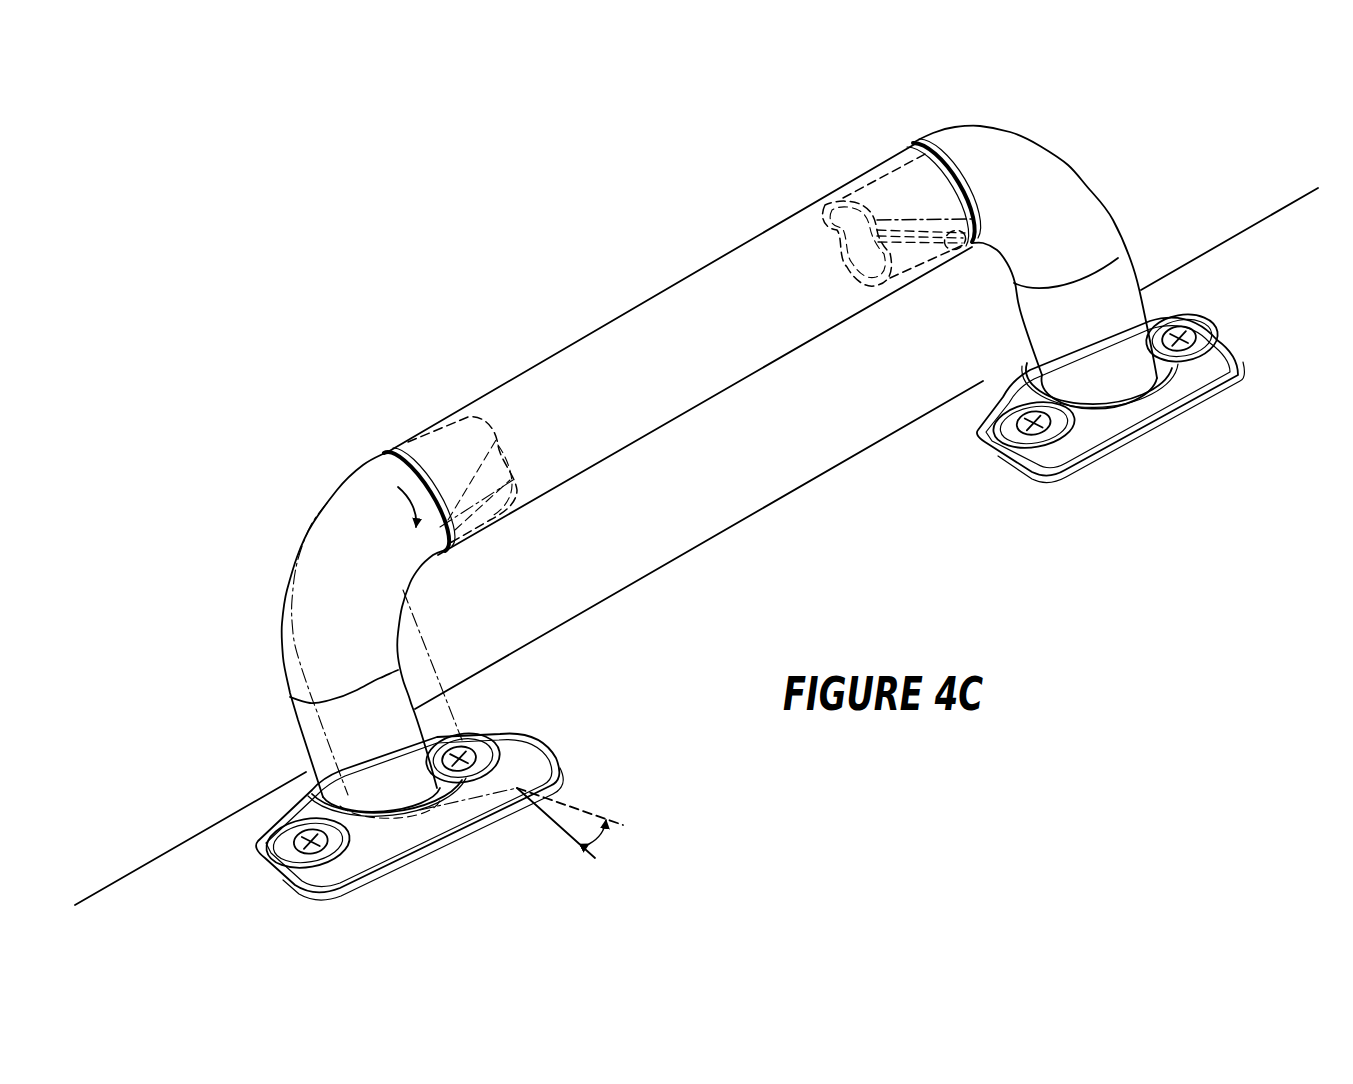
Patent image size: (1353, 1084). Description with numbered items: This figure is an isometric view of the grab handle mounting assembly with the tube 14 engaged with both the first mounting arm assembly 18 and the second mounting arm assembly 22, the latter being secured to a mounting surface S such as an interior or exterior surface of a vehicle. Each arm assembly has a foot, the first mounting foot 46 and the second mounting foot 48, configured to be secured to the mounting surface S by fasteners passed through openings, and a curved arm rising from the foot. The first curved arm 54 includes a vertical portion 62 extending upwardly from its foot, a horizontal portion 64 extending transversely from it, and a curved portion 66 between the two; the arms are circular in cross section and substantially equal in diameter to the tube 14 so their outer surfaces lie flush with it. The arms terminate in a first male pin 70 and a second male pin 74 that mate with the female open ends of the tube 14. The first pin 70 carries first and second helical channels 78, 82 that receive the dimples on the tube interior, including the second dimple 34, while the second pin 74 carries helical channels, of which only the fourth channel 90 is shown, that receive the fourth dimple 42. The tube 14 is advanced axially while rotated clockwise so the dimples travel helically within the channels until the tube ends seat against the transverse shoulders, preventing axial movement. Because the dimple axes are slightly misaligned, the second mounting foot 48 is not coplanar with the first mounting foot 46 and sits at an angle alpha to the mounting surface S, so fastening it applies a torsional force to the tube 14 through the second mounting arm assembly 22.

The tube 14 is at (697, 283).
The first mounting arm assembly 18 is at (1127, 121).
The second mounting arm assembly 22 is at (295, 476).
The second dimple 34 is at (963, 243).
The fourth dimple 42 is at (470, 532).
The first mounting foot 46 is at (1186, 371).
The second mounting foot 48 is at (262, 850).
The first curved arm 54 is at (1116, 198).
The vertical portion 62 is at (1123, 264).
The horizontal portion 64 is at (985, 141).
The curved portion 66 is at (1058, 152).
The first male pin 70 is at (887, 188).
The second male pin 74 is at (455, 440).
The first helical channel 78 is at (830, 247).
The second helical channel 82 is at (910, 243).
The fourth channel 90 is at (512, 507).
The mounting surface S is at (830, 467).